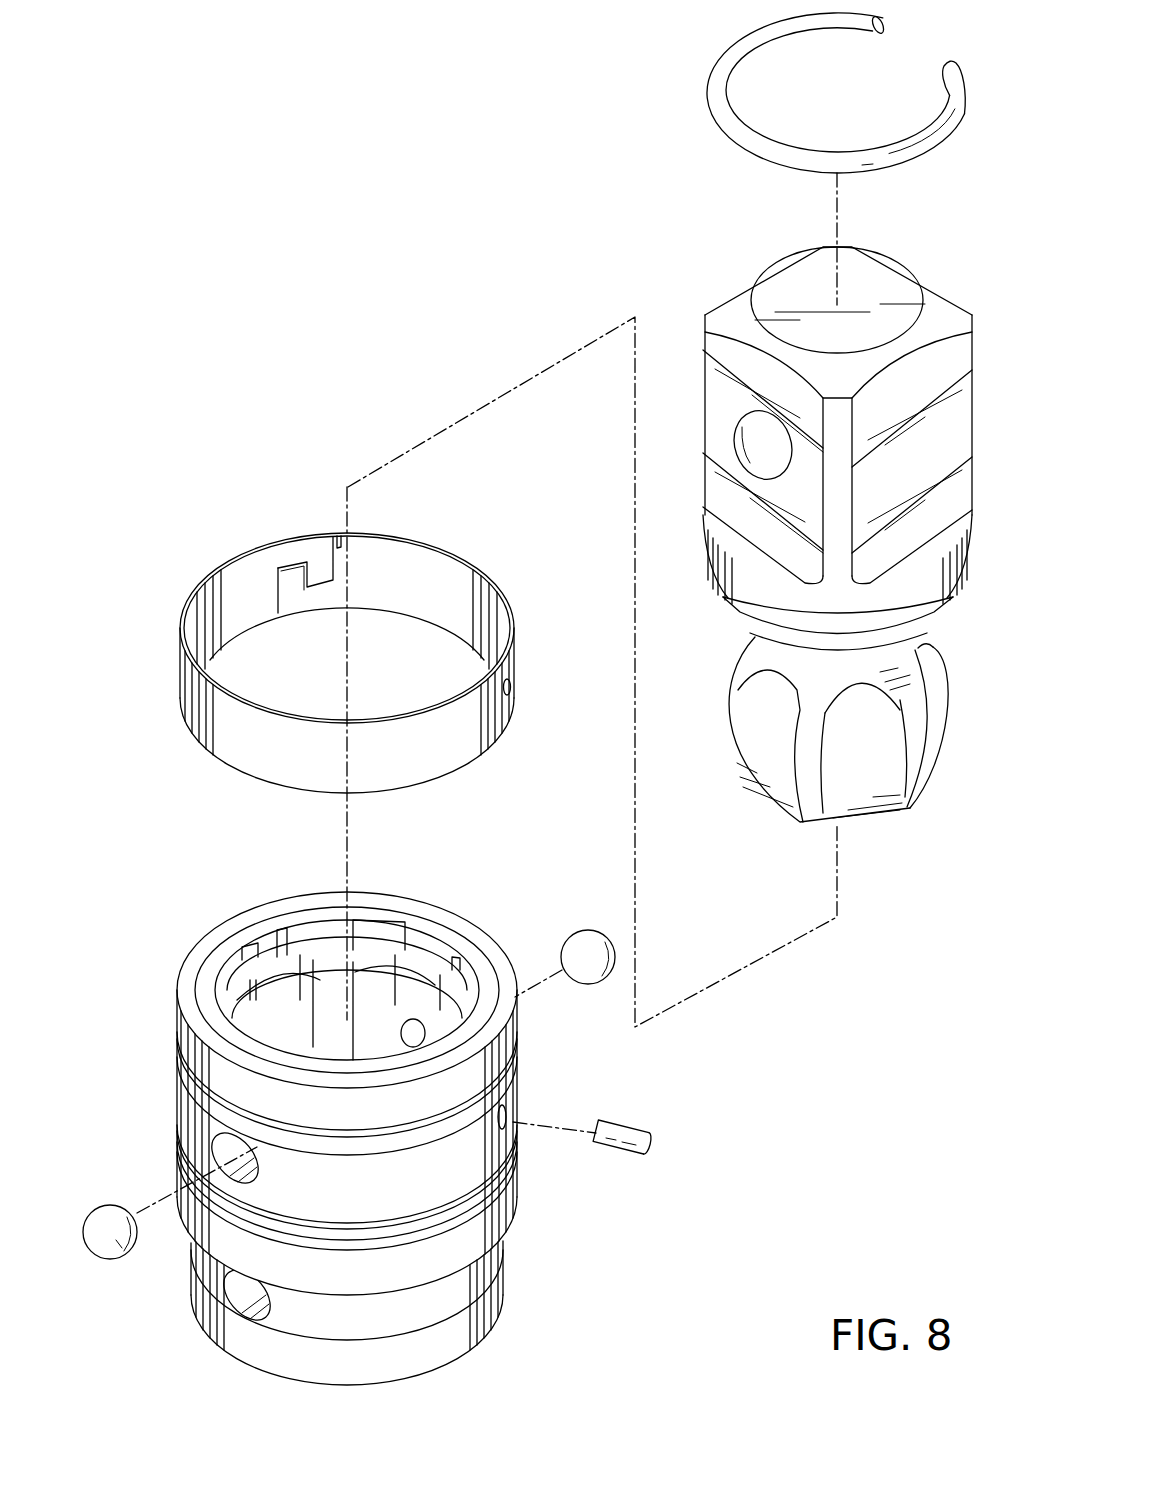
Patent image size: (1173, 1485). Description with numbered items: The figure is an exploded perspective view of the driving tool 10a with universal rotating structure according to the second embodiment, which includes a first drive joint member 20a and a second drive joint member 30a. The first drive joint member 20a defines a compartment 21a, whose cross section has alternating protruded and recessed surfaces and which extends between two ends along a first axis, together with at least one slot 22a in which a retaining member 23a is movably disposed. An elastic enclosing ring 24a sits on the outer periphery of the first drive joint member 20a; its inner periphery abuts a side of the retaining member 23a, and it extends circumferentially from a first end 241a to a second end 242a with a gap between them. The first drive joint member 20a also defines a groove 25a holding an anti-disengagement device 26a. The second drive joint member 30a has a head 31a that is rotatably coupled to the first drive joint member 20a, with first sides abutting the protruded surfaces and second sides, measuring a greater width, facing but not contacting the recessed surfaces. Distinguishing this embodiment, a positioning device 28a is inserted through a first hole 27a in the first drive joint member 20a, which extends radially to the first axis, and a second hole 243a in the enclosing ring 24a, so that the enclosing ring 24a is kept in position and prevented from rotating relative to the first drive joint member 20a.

The driving tool 10a is at (330, 310).
The first drive joint member 20a is at (363, 1113).
The compartment 21a is at (371, 977).
The slot 22a is at (417, 1030).
The retaining member 23a is at (587, 947).
The enclosing ring 24a is at (391, 643).
The first end 241a is at (338, 537).
The second end 242a is at (278, 587).
The second hole 243a is at (510, 686).
The groove 25a is at (262, 963).
The anti-disengagement device 26a is at (727, 107).
The first hole 27a is at (512, 1110).
The positioning device 28a is at (623, 1133).
The second drive joint member 30a is at (798, 584).
The head 31a is at (889, 844).